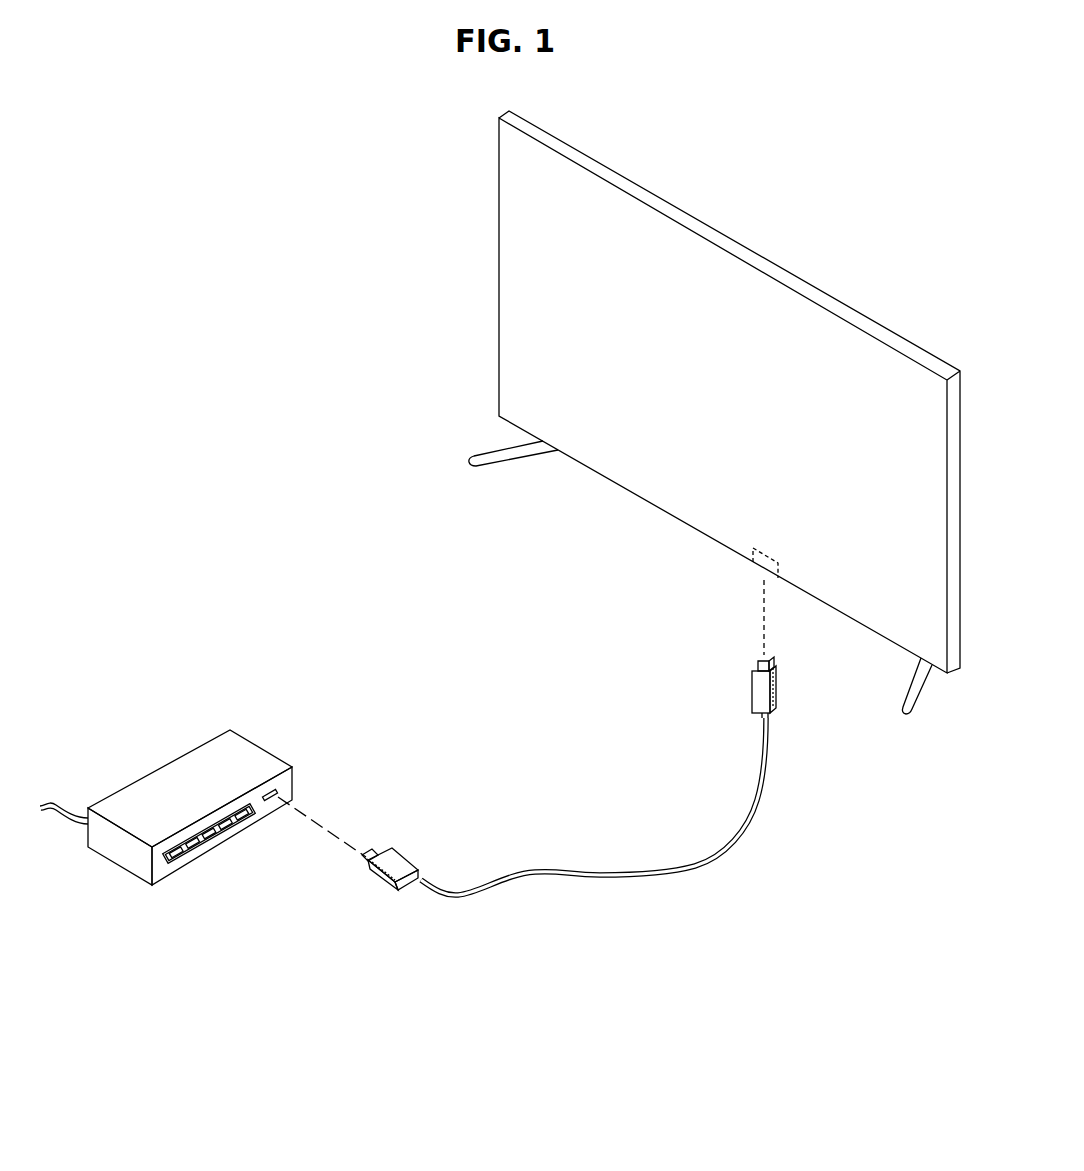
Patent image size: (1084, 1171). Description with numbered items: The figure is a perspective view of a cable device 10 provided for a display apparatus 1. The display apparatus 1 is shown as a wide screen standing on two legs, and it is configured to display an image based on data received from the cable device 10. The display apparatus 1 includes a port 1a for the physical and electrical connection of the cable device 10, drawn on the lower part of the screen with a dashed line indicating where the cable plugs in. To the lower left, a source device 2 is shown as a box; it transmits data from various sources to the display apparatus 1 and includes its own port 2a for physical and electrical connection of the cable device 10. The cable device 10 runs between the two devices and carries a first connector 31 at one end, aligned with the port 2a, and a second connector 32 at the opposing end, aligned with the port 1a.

The display apparatus 1 is at (703, 196).
The port 1a is at (750, 561).
The source device 2 is at (246, 753).
The port 2a is at (288, 784).
The cable device 10 is at (569, 822).
The first connector 31 is at (398, 860).
The second connector 32 is at (757, 690).